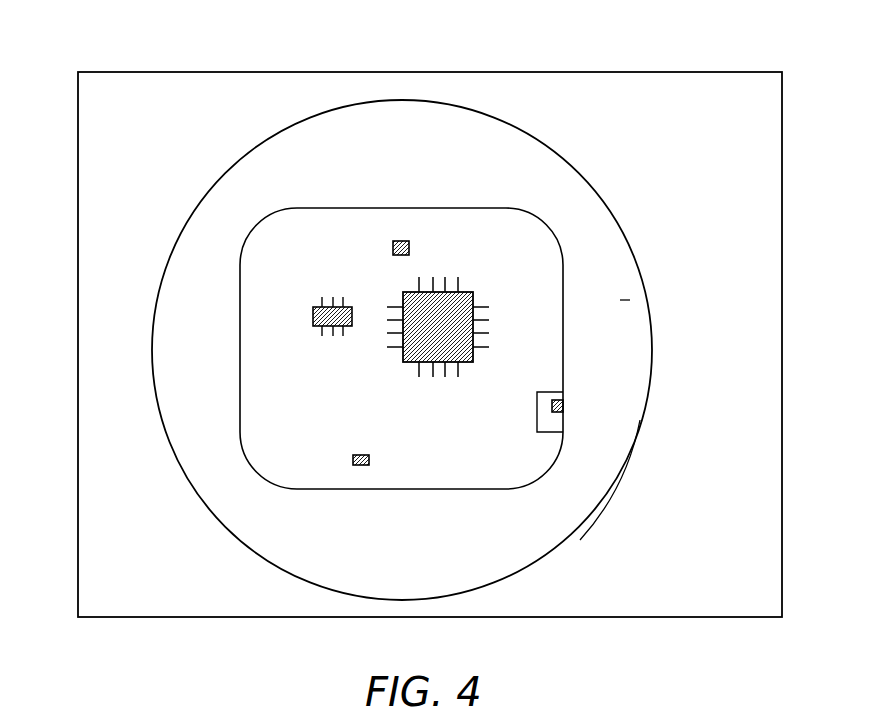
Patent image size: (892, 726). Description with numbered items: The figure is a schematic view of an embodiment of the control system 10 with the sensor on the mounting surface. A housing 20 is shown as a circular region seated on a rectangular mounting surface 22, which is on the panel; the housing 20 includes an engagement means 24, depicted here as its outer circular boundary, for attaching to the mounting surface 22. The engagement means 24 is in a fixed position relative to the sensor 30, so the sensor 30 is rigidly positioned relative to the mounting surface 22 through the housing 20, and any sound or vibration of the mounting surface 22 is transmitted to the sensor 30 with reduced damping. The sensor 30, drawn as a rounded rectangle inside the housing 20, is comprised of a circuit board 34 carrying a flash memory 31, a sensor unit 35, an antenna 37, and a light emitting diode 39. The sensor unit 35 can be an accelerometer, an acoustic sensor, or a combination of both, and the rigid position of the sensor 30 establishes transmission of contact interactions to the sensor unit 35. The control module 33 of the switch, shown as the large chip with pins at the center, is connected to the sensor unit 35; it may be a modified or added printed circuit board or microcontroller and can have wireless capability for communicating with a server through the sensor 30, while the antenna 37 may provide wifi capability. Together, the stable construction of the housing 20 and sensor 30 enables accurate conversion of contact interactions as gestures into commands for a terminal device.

The control system 10 is at (142, 60).
The mounting surface 22 is at (718, 83).
The housing 20 is at (648, 218).
The engagement means 24 is at (607, 490).
The circuit board 34 is at (590, 352).
The sensor 30 is at (250, 244).
The sensor unit 35 is at (402, 240).
The flash memory 31 is at (330, 306).
The control module 33 is at (466, 296).
The antenna 37 is at (547, 422).
The light emitting diode 39 is at (355, 456).